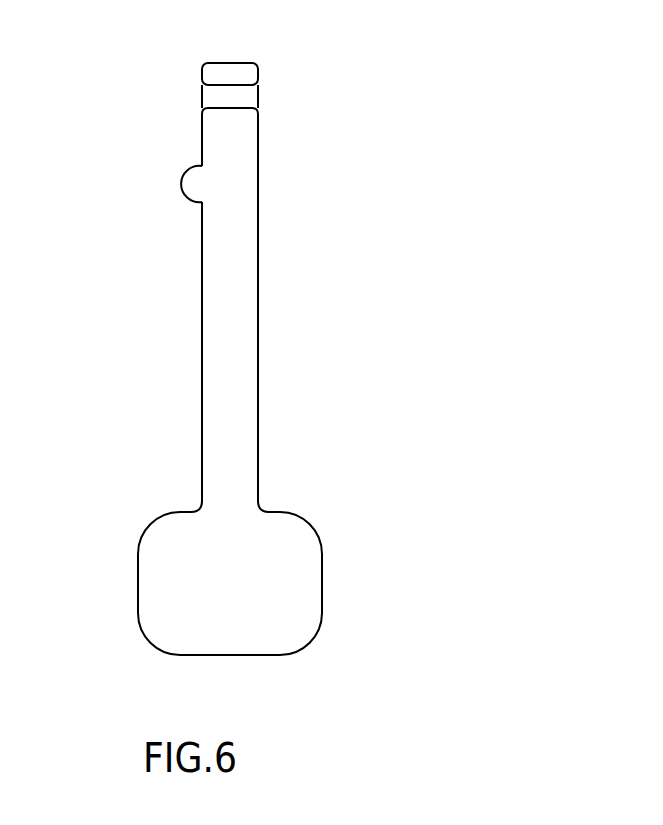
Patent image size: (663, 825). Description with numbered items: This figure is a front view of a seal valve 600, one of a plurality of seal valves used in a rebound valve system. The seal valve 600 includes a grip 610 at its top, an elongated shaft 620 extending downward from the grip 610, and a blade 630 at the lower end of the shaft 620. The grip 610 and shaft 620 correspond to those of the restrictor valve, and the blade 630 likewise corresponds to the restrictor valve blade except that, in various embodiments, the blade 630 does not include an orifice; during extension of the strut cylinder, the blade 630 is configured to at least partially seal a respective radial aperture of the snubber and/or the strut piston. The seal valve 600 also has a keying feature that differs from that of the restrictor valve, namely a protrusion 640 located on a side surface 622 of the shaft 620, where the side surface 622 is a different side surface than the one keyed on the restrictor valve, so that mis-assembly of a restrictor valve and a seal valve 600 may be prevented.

The seal valve 600 is at (170, 48).
The grip 610 is at (235, 85).
The shaft 620 is at (235, 350).
The side surface 622 is at (205, 303).
The blade 630 is at (287, 562).
The protrusion 640 is at (187, 182).